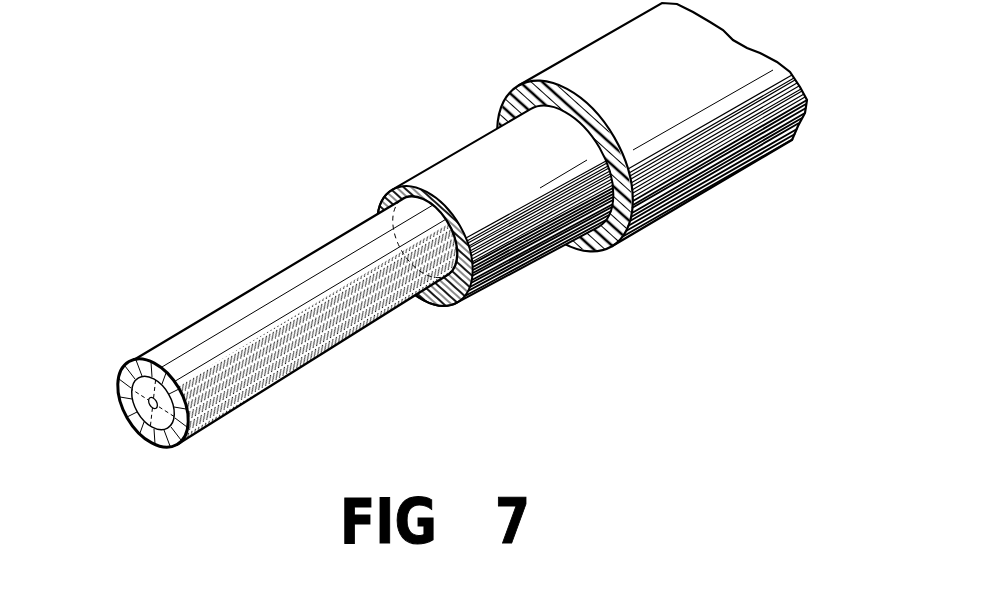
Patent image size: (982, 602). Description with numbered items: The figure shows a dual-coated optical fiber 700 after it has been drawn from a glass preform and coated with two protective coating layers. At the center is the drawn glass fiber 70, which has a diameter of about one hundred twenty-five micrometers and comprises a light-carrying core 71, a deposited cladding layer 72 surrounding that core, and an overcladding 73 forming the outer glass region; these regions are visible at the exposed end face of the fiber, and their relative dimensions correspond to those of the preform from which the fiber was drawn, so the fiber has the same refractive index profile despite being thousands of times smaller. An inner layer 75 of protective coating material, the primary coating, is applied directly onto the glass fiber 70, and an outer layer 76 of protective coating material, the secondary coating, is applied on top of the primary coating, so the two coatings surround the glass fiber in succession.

The dual-coated optical fiber 700 is at (429, 238).
The drawn fiber 70 is at (254, 335).
The light-carrying core 71 is at (149, 404).
The deposited cladding layer 72 is at (132, 399).
The overcladding 73 is at (133, 367).
The inner layer of protective coating material 75 is at (468, 150).
The outer layer of protective coating material 76 is at (605, 47).